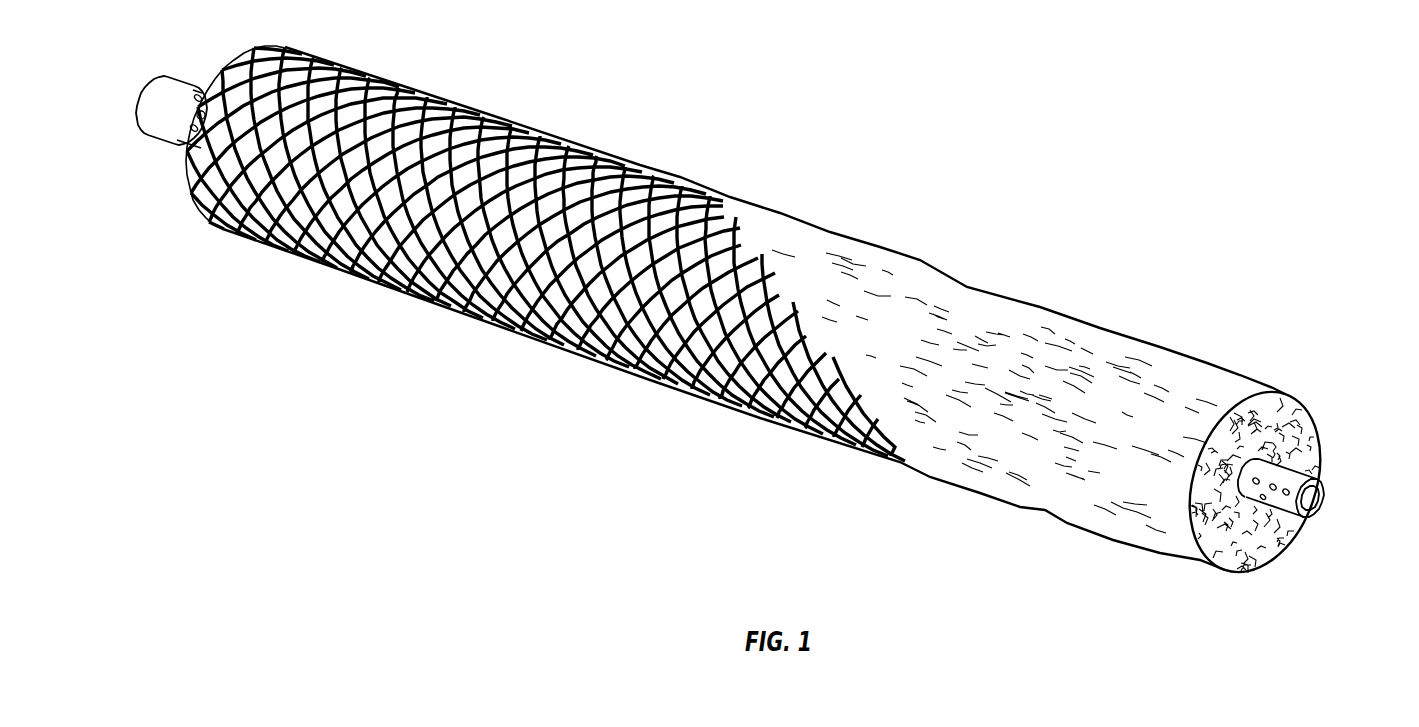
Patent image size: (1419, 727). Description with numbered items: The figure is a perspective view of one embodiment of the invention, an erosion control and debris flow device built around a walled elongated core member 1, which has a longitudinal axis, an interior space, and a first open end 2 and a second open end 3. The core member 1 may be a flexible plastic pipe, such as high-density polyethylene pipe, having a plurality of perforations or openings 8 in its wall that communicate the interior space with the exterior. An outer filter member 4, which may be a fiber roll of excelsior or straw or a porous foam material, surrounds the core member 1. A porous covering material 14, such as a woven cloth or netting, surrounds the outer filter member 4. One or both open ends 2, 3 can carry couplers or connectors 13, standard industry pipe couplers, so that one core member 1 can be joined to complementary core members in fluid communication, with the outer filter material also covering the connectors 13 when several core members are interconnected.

The walled elongated core member 1 is at (1316, 485).
The first open end 2 is at (1313, 503).
The second open end 3 is at (155, 105).
The outer filter member 4 is at (920, 277).
The openings 8 is at (1258, 484).
The couplers or connectors 13 is at (157, 122).
The porous covering material 14 is at (440, 310).